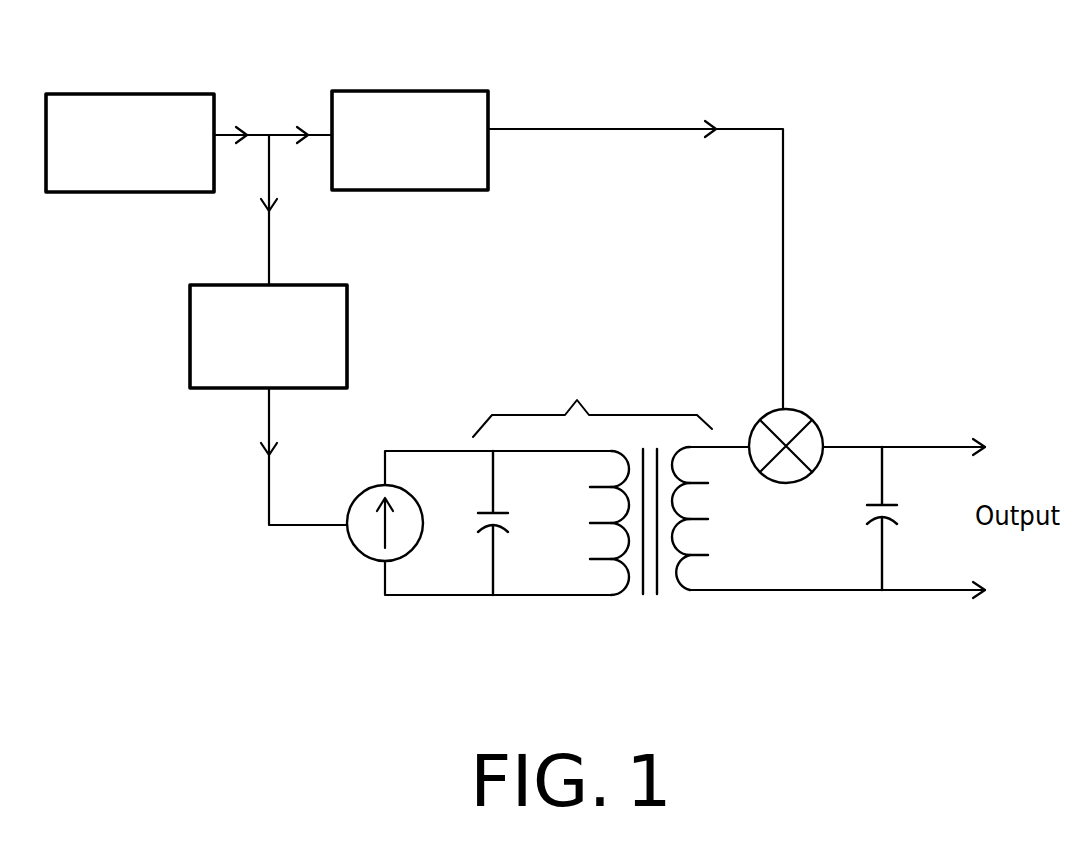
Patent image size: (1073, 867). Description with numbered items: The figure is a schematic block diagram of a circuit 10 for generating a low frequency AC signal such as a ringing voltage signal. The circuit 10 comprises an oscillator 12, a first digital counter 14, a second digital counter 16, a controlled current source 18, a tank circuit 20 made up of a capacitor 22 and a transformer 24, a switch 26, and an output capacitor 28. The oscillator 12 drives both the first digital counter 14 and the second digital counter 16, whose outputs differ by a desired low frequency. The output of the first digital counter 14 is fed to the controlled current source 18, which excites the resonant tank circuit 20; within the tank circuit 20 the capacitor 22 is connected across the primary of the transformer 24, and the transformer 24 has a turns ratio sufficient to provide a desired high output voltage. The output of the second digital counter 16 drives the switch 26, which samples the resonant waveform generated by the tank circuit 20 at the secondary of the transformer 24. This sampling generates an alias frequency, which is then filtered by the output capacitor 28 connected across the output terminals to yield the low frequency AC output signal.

The circuit 10 is at (897, 206).
The oscillator 12 is at (120, 93).
The first digital counter 14 is at (197, 320).
The second digital counter 16 is at (393, 89).
The controlled current source 18 is at (360, 541).
The tank circuit 20 is at (577, 400).
The capacitor 22 is at (485, 531).
The transformer 24 is at (648, 593).
The switch 26 is at (807, 413).
The output capacitor 28 is at (877, 522).